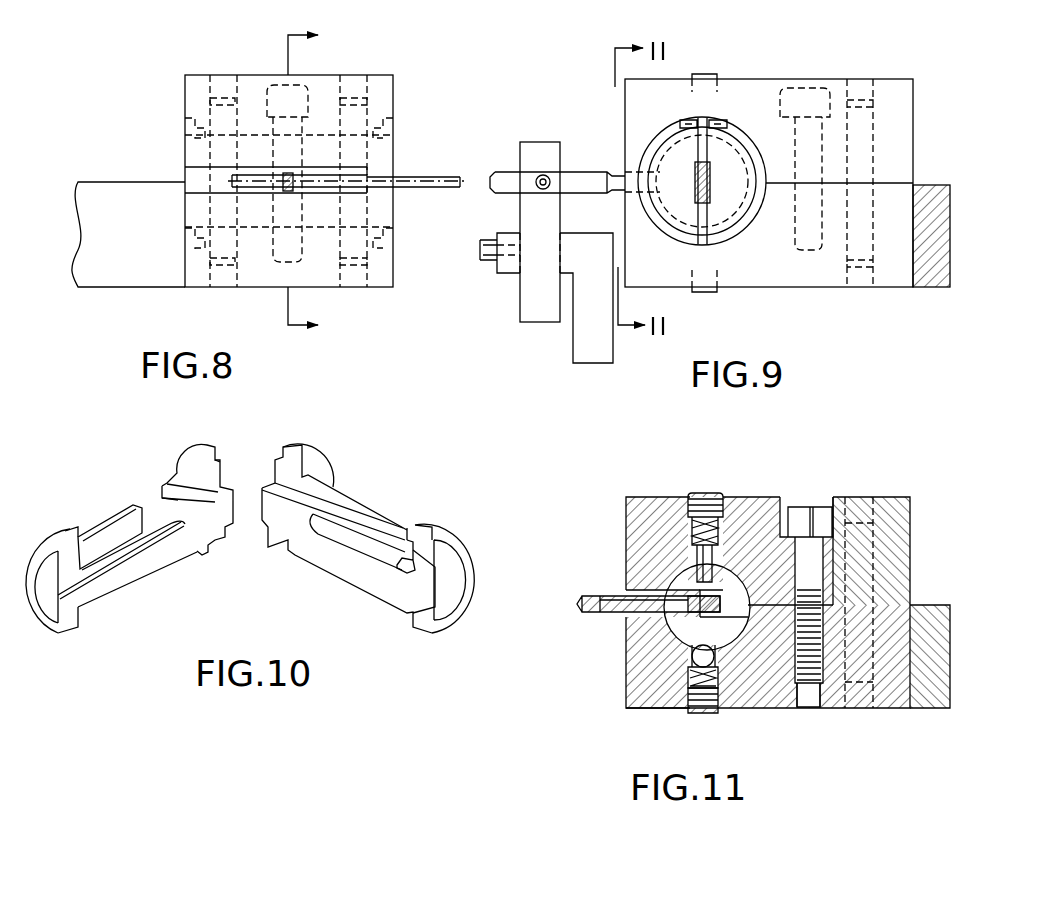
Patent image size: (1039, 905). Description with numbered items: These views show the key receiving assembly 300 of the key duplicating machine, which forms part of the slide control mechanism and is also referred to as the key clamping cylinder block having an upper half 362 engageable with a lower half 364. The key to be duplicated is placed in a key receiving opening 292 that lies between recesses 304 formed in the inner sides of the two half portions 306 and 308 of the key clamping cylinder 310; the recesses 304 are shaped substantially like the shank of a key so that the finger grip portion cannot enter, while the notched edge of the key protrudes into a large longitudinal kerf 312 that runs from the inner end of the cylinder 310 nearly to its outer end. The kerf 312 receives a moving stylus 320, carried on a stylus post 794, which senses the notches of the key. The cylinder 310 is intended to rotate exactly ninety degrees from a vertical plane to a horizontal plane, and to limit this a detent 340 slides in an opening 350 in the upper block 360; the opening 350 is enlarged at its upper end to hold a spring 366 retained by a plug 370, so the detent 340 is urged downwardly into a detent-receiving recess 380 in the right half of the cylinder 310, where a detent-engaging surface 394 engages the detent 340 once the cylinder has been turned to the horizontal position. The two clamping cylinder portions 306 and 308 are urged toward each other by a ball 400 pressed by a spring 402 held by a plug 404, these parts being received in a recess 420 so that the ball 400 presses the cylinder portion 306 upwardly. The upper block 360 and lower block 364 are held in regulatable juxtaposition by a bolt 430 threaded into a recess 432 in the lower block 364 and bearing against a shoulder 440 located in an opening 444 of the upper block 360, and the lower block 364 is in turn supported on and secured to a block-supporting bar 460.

In FIG. 9, the key receiving opening 292 is at (710, 185).
In FIG. 9, the key receiving assembly 300 is at (753, 74).
In FIG. 10, the recess 304 is at (122, 560).
In FIG. 9, the half portion of key clamping cylinder 306 is at (677, 208).
In FIG. 10, the half portion of key clamping cylinder 306 is at (100, 522).
In FIG. 11, the half portion of key clamping cylinder 306 is at (740, 636).
In FIG. 9, the half portion of key clamping cylinder 308 is at (718, 220).
In FIG. 10, the half portion of key clamping cylinder 308 is at (352, 500).
In FIG. 9, the key clamping cylinder 310 is at (742, 147).
In FIG. 11, the key clamping cylinder 310 is at (683, 578).
In FIG. 11, the kerf 312 is at (640, 652).
In FIG. 9, the stylus 320 is at (692, 183).
In FIG. 11, the stylus 320 is at (642, 597).
In FIG. 11, the detent 340 is at (712, 560).
In FIG. 11, the opening 350 is at (720, 552).
In FIG. 11, the upper block 360 is at (652, 502).
In FIG. 11, the upper half 362 is at (882, 490).
In FIG. 11, the lower half 364 is at (655, 622).
In FIG. 11, the spring 366 is at (716, 542).
In FIG. 11, the plug 370 is at (708, 494).
In FIG. 10, the detent-receiving recess 380 is at (402, 537).
In FIG. 11, the detent-engaging surface 394 is at (718, 590).
In FIG. 11, the ball 400 is at (723, 656).
In FIG. 11, the spring 402 is at (723, 675).
In FIG. 11, the plug 404 is at (722, 707).
In FIG. 11, the recess 420 is at (683, 680).
In FIG. 11, the bolt 430 is at (810, 593).
In FIG. 11, the recess 432 is at (823, 642).
In FIG. 11, the shoulder 440 is at (833, 540).
In FIG. 11, the opening 444 is at (838, 508).
In FIG. 8, the block-supporting bar 460 is at (120, 188).
In FIG. 9, the block-supporting bar 460 is at (950, 200).
In FIG. 11, the block-supporting bar 460 is at (950, 657).
In FIG. 9, the stylus post 794 is at (538, 242).